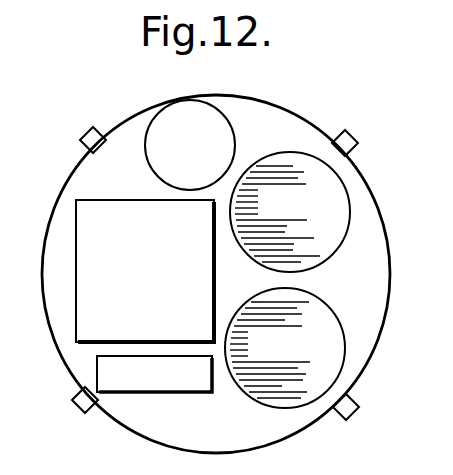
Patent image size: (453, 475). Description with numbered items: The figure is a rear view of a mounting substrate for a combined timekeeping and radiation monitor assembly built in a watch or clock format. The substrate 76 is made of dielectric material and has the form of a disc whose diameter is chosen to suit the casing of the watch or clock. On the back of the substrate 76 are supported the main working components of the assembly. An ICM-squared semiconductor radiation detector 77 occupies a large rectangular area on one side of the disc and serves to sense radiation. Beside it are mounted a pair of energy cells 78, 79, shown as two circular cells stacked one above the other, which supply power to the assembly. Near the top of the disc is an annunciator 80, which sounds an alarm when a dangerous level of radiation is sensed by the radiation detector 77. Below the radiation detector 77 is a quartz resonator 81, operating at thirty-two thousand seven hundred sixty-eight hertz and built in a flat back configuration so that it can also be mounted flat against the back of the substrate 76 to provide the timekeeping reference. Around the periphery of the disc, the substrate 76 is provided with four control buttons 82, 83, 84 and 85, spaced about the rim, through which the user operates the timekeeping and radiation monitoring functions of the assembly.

The substrate 76 is at (392, 272).
The semiconductor radiation detector 77 is at (98, 188).
The energy cell 78 is at (354, 217).
The energy cell 79 is at (348, 340).
The annunciator 80 is at (226, 116).
The quartz resonator 81 is at (131, 393).
The control button 82 is at (73, 401).
The control button 83 is at (358, 405).
The control button 84 is at (358, 146).
The control button 85 is at (96, 127).